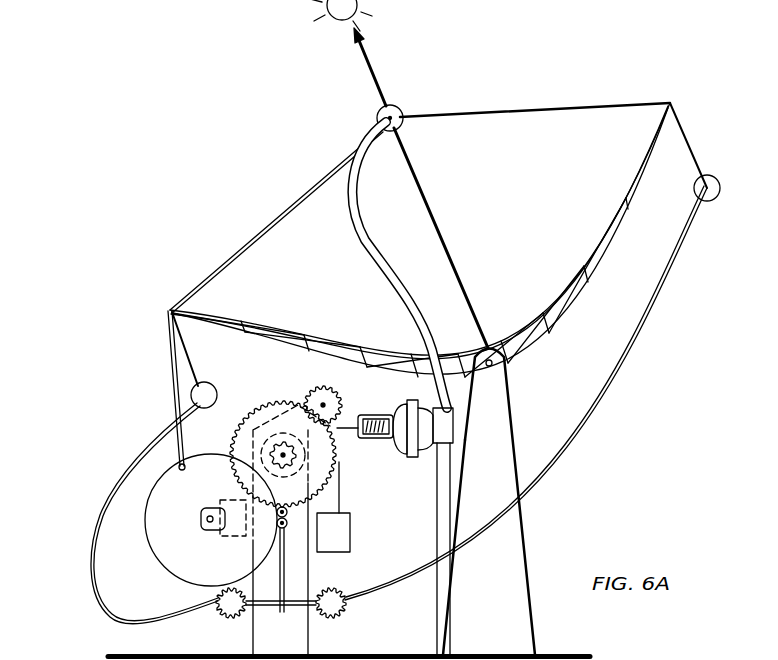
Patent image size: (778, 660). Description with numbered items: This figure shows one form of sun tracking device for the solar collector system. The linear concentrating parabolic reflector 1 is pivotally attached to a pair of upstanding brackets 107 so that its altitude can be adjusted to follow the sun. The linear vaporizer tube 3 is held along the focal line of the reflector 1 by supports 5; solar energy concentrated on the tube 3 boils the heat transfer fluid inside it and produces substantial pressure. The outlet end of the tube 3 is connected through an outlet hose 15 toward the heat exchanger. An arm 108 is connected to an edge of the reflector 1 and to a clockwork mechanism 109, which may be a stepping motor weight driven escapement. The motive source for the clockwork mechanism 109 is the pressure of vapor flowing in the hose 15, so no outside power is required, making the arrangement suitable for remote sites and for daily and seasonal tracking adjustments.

The linear concentrating parabolic reflector 1 is at (651, 130).
The vaporizer tube 3 is at (432, 209).
The supports 5 is at (537, 113).
The outlet hose 15 is at (375, 256).
The upstanding brackets 107 is at (510, 538).
The arm 108 is at (193, 390).
The clockwork mechanism 109 is at (150, 575).